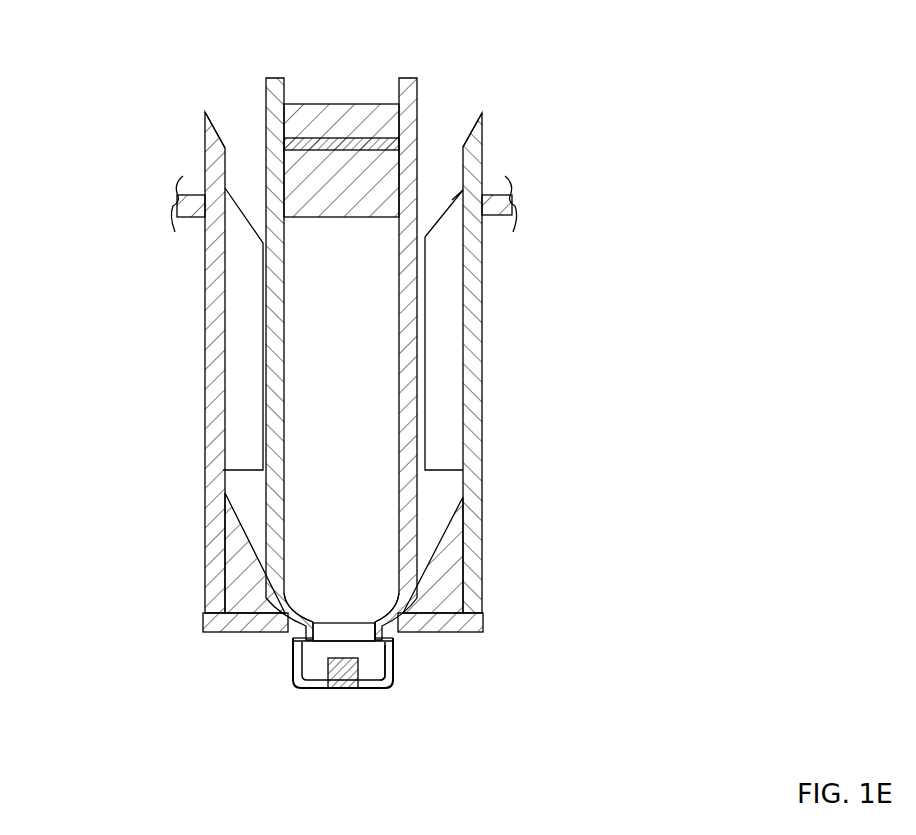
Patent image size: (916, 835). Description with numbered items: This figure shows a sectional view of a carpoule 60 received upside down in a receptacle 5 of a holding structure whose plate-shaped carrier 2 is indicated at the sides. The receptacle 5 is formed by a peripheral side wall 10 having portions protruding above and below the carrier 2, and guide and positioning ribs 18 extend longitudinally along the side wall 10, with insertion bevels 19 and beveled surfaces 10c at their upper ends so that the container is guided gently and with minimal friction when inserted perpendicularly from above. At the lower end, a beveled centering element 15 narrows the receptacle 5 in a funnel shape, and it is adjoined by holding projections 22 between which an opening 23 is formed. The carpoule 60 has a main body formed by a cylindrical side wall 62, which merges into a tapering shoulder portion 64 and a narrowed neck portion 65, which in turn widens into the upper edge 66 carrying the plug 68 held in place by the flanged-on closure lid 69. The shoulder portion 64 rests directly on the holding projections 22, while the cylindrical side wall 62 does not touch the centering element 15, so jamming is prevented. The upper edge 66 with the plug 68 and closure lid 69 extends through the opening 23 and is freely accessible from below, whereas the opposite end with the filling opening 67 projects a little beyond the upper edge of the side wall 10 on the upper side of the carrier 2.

The plate-shaped carrier 2 is at (197, 212).
The receptacle 5 is at (437, 182).
The side wall 10 is at (468, 313).
The bevel 10c is at (472, 138).
The centering element 15 is at (440, 558).
The guide and positioning rib 18 is at (440, 387).
The insertion bevel 19 is at (438, 220).
The holding projection 22 is at (447, 620).
The opening 23 is at (385, 630).
The carpoule 60 is at (389, 413).
The cylindrical side wall 62 is at (407, 442).
The shoulder portion 64 is at (293, 608).
The narrowed neck portion 65 is at (318, 622).
The upper edge 66 is at (302, 658).
The filling opening 67 is at (325, 85).
The plug 68 is at (317, 135).
The flanged-on closure lid 69 is at (390, 673).